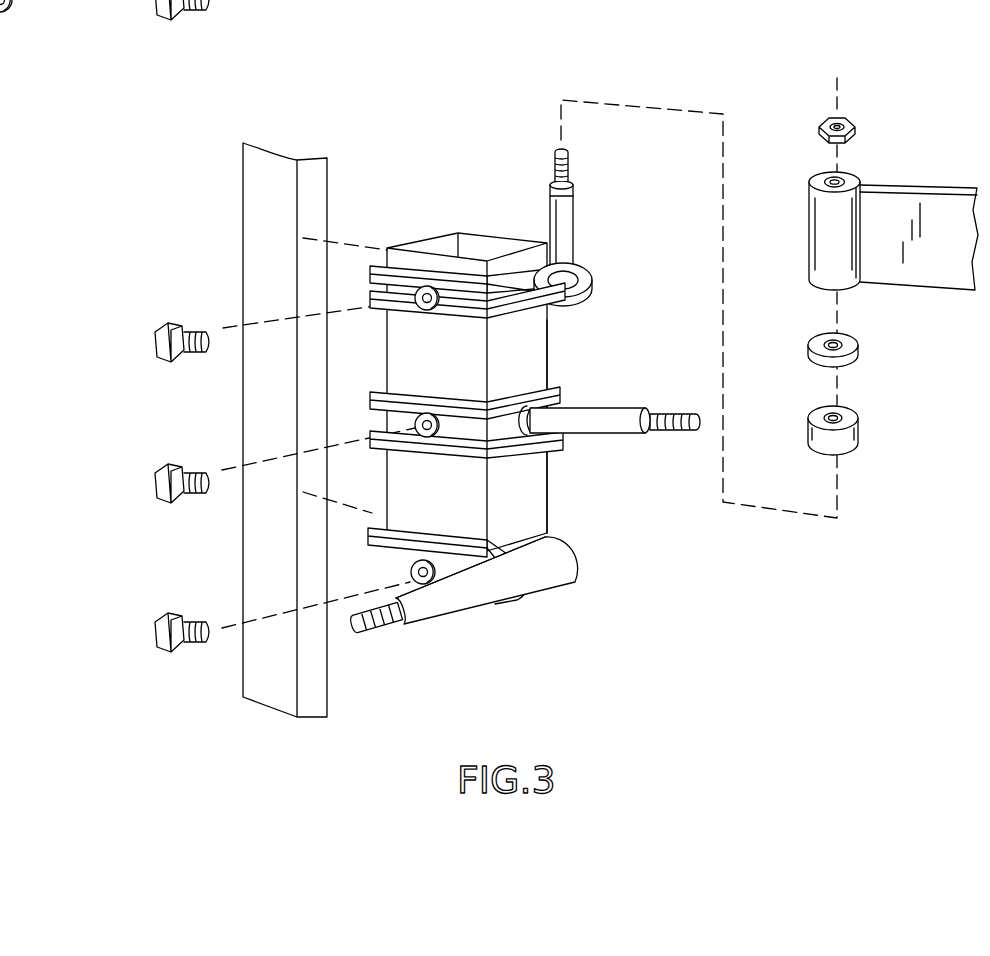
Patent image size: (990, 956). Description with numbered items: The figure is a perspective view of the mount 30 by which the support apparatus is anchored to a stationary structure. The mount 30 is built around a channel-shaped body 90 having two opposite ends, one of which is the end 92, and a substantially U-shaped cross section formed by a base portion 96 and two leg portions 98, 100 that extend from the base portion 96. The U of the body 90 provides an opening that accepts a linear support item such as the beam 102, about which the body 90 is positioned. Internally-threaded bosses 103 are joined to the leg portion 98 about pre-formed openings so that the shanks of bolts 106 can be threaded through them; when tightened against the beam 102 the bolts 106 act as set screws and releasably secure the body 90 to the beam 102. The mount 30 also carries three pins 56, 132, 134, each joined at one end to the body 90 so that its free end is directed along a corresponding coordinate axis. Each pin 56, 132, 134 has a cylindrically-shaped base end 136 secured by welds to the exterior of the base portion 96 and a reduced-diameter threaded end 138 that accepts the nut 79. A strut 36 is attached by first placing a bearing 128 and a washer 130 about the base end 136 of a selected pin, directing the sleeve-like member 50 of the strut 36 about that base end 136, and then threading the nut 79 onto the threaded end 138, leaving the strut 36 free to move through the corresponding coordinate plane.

The mount 30 is at (547, 490).
The strut 36 is at (918, 290).
The sleeve-like member 50 is at (810, 230).
The pin 56 is at (575, 217).
The nut 79 is at (848, 120).
The channel-shaped body 90 is at (483, 245).
The end 92 is at (443, 607).
The base portion 96 is at (548, 513).
The leg portion 98 is at (425, 485).
The leg portion 100 is at (462, 232).
The beam 102 is at (253, 657).
The internally-threaded bosses 103 is at (423, 418).
The bolts 106 is at (187, 473).
The bearing 128 is at (858, 445).
The washer 130 is at (855, 358).
The pin 132 is at (620, 433).
The pin 134 is at (465, 607).
The base end 136 is at (592, 292).
The threaded end 138 is at (568, 167).